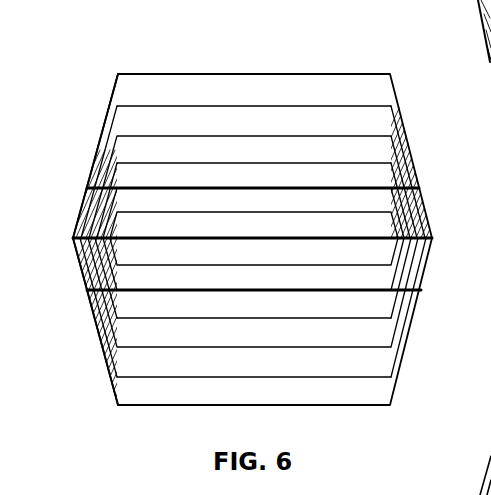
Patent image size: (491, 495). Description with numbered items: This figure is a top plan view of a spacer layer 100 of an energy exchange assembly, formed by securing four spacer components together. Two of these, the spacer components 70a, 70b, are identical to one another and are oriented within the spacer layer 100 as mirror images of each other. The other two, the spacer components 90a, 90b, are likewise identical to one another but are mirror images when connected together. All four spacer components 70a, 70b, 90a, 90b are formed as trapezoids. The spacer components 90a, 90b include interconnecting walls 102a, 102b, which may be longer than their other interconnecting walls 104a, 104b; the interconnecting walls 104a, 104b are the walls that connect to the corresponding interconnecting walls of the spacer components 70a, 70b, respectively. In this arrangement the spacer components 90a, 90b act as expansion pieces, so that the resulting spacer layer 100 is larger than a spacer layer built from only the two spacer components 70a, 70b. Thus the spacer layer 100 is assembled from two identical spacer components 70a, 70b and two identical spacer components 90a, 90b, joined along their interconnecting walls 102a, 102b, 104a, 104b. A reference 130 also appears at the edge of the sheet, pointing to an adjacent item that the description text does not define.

The spacer layer 100 is at (82, 79).
The interconnecting wall 102a is at (87, 236).
The interconnecting wall 102b is at (83, 272).
The interconnecting wall 104a is at (113, 198).
The interconnecting wall 104b is at (103, 271).
The spacer component 70a is at (405, 137).
The spacer component 70b is at (405, 347).
The spacer component 90a is at (428, 211).
The spacer component 90b is at (425, 265).
The adjacent assembly 130 is at (470, 449).